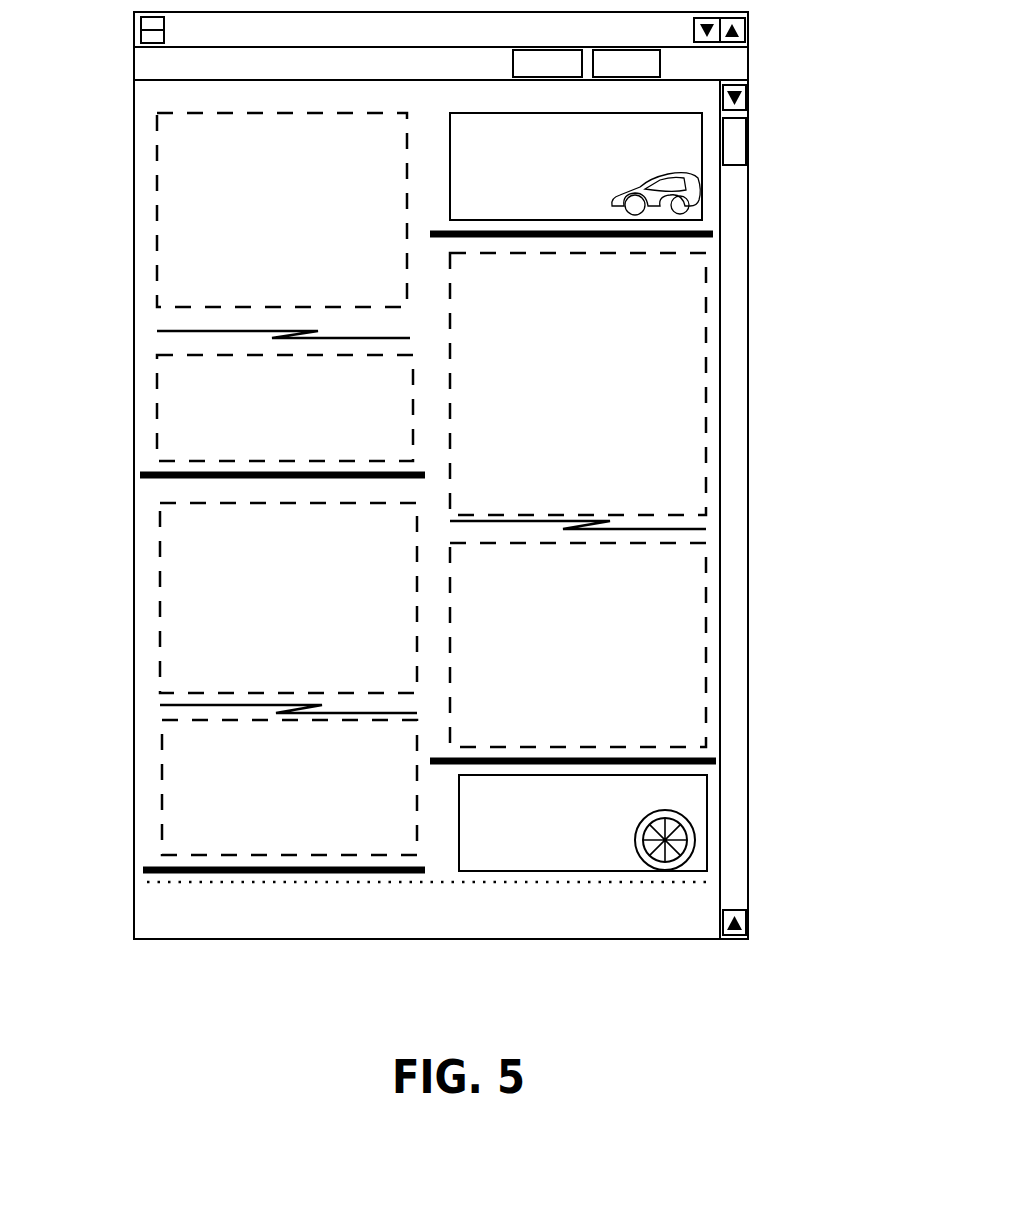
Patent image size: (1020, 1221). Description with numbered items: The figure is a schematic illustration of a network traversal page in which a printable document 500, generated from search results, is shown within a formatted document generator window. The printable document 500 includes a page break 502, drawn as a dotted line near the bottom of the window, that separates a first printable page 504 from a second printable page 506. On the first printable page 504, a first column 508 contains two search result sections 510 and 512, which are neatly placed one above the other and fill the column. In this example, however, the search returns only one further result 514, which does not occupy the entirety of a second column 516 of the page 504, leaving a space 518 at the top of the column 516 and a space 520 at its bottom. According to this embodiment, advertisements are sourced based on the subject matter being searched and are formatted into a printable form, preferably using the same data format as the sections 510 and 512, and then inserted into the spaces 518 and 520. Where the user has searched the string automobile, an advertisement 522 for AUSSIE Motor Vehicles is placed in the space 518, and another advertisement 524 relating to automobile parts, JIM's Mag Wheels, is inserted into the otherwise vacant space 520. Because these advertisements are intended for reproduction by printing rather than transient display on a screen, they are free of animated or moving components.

The printable document 500 is at (572, 915).
The page break 502 is at (200, 882).
The first printable page 504 is at (180, 95).
The second printable page 506 is at (202, 920).
The first column 508 is at (237, 559).
The search result section 510 is at (121, 85).
The search result section 512 is at (120, 483).
The further result 514 is at (770, 237).
The second column 516 is at (651, 558).
The space 518 is at (654, 180).
The space 520 is at (666, 851).
The advertisement 522 is at (735, 210).
The advertisement 524 is at (718, 862).